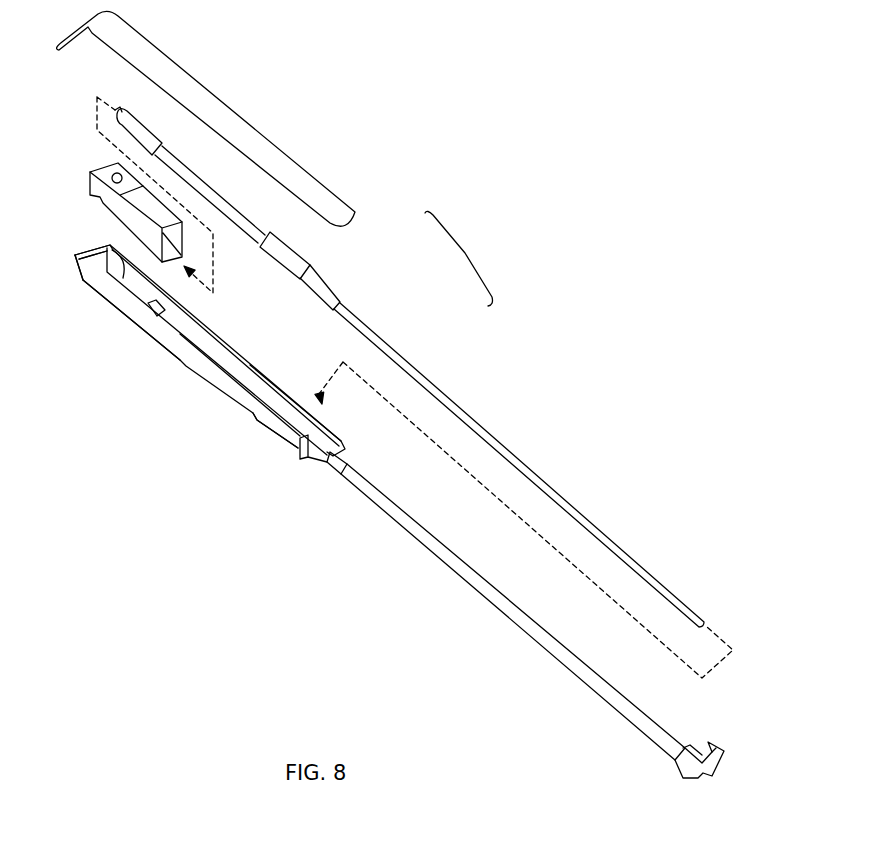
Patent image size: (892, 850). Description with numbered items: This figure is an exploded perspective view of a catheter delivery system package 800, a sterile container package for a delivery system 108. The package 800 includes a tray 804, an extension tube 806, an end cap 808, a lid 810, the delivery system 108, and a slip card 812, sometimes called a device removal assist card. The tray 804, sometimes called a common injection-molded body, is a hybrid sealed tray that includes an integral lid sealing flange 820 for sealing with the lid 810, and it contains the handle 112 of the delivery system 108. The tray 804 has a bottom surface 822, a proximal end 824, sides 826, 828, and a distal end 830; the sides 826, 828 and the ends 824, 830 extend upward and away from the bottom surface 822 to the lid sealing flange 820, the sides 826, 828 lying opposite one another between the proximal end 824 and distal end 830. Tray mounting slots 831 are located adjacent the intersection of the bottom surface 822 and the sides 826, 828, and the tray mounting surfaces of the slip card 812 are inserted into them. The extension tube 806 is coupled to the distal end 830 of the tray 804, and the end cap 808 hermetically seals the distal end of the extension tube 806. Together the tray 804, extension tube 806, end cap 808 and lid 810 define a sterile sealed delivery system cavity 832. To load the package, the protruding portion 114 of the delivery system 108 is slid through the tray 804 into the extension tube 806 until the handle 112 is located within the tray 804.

The catheter delivery system package 800 is at (188, 500).
The tray 804 is at (150, 344).
The extension tube 806 is at (457, 573).
The end cap 808 is at (718, 745).
The lid 810 is at (293, 172).
The slip card 812 is at (93, 197).
The lid sealing flange 820 is at (245, 350).
The bottom surface 822 is at (243, 424).
The proximal end 824 is at (80, 264).
The side 826 is at (108, 315).
The side 828 is at (222, 328).
The distal end 830 is at (358, 452).
The tray mounting slot 831 is at (108, 250).
The delivery system cavity 832 is at (288, 382).
The delivery system 108 is at (465, 253).
The handle 112 is at (310, 262).
The protruding portion 114 is at (400, 352).